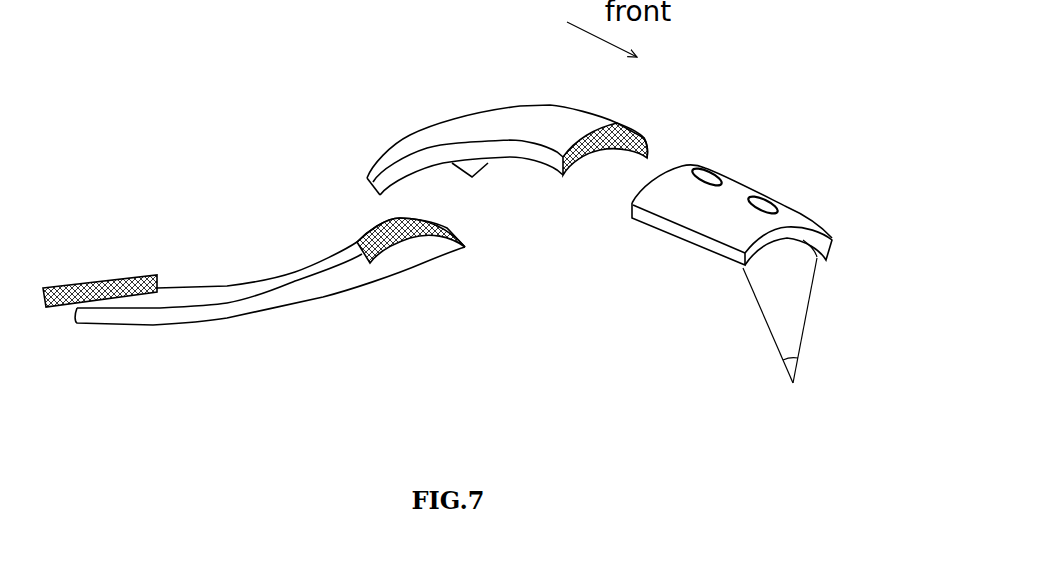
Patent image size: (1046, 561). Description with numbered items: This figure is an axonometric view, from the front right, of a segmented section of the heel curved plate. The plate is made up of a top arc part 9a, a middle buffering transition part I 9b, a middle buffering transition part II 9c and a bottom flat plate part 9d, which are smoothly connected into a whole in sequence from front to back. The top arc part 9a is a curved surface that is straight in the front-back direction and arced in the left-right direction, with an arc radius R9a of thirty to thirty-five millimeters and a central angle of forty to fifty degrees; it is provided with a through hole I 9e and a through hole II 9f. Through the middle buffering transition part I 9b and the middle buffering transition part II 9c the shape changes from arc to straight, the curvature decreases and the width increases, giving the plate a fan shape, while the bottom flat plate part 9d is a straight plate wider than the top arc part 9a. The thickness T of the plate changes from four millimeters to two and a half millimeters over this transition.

The top arc part 9a is at (748, 214).
The middle buffering transition part I 9b is at (477, 153).
The middle buffering transition part II 9c is at (405, 255).
The bottom flat plate part 9d is at (107, 279).
The through hole I 9e is at (710, 170).
The through hole II 9f is at (767, 203).
The thickness of the curved heel plate T is at (648, 165).
The arc radius of top arc part R9a is at (807, 307).